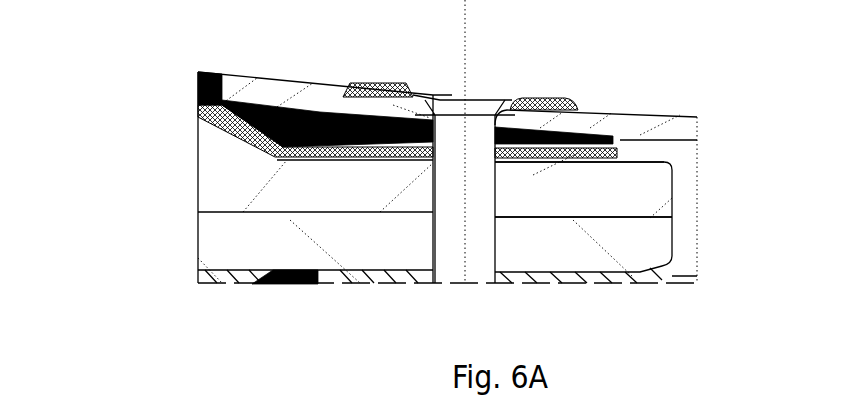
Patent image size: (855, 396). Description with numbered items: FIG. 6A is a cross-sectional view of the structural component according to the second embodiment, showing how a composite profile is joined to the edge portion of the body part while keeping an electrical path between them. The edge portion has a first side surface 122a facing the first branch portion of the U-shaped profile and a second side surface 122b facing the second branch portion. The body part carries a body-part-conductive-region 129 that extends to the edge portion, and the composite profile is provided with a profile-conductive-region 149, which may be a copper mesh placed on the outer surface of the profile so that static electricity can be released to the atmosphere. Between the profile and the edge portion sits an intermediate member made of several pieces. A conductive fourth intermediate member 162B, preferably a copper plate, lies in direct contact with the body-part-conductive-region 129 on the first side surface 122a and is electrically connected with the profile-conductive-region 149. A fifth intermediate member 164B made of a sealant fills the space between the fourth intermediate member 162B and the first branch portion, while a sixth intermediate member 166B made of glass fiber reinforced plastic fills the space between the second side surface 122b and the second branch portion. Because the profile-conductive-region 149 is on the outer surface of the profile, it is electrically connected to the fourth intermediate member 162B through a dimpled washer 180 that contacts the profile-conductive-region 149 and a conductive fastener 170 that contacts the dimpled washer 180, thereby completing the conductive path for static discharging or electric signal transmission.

The body-part-conductive-region 129 is at (197, 126).
The profile-conductive-region 149 is at (363, 90).
The dimpled washer 180 is at (410, 88).
The fourth intermediate member 162B is at (323, 160).
The fifth intermediate member 164B is at (575, 138).
The sixth intermediate member 166B is at (340, 271).
The first side surface 122a is at (618, 158).
The second side surface 122b is at (537, 273).
The conductive fastener 170 is at (485, 198).